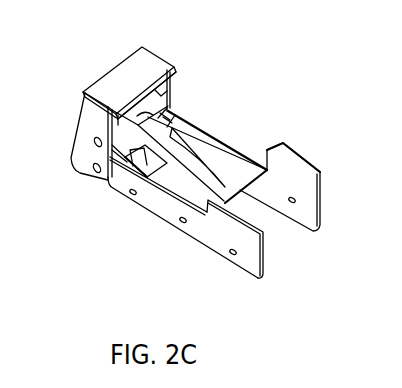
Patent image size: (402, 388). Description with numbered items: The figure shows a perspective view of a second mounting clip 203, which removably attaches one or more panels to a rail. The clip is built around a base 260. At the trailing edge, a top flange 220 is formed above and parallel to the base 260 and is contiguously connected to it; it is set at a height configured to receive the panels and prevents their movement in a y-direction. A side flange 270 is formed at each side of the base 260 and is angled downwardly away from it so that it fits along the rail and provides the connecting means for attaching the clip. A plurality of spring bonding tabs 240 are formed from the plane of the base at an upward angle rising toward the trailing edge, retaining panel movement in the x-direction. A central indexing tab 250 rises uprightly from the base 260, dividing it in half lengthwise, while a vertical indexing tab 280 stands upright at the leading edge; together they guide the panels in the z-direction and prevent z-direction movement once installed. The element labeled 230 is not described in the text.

The second mounting clip 203 is at (262, 300).
The top flange 220 is at (142, 60).
The side mounting plate 230 is at (87, 148).
The spring bonding tabs 240 is at (123, 176).
The central indexing tab 250 is at (190, 131).
The base 260 is at (183, 188).
The side flange 270 is at (211, 242).
The vertical indexing tab 280 is at (277, 171).